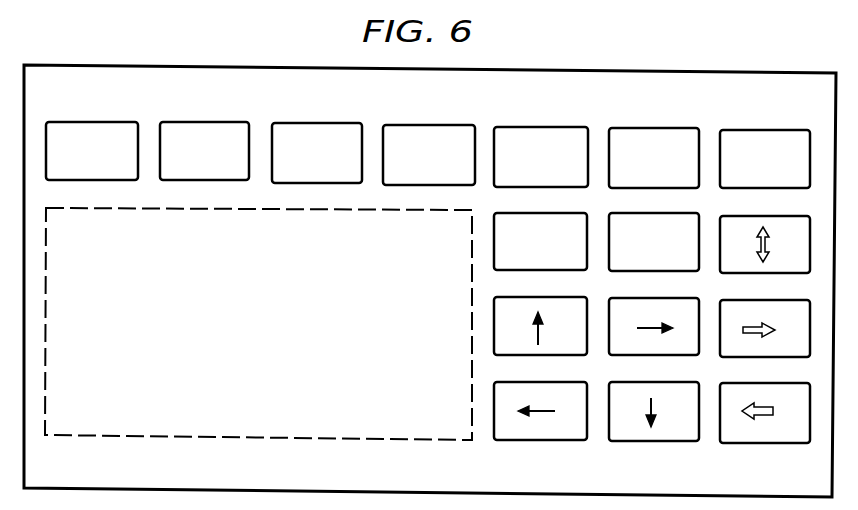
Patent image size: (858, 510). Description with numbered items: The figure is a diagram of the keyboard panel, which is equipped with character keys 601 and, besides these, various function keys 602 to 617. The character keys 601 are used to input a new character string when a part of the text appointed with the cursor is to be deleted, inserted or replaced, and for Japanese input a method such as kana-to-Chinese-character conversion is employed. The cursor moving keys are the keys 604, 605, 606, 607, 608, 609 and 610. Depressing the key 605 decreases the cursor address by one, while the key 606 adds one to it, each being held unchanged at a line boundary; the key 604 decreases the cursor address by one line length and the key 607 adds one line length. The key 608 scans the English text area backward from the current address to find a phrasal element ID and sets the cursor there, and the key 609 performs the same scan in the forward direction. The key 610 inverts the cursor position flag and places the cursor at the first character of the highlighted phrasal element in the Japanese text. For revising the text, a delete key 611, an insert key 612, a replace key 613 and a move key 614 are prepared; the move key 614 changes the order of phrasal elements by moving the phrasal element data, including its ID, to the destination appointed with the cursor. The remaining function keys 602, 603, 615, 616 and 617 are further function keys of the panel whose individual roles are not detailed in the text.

The character keys 601 is at (153, 437).
The function key 602 is at (523, 213).
The function key 603 is at (636, 213).
The cursor moving key 604 is at (518, 297).
The cursor moving key 605 is at (525, 382).
The cursor moving key 606 is at (634, 298).
The cursor moving key 607 is at (640, 382).
The cursor moving key 608 is at (748, 383).
The cursor moving key 609 is at (748, 300).
The cursor moving key 610 is at (748, 216).
The delete key 611 is at (764, 130).
The insert key 612 is at (650, 128).
The replace key 613 is at (542, 127).
The move key 614 is at (430, 125).
The function key 615 is at (312, 123).
The function key 616 is at (210, 122).
The function key 617 is at (88, 122).